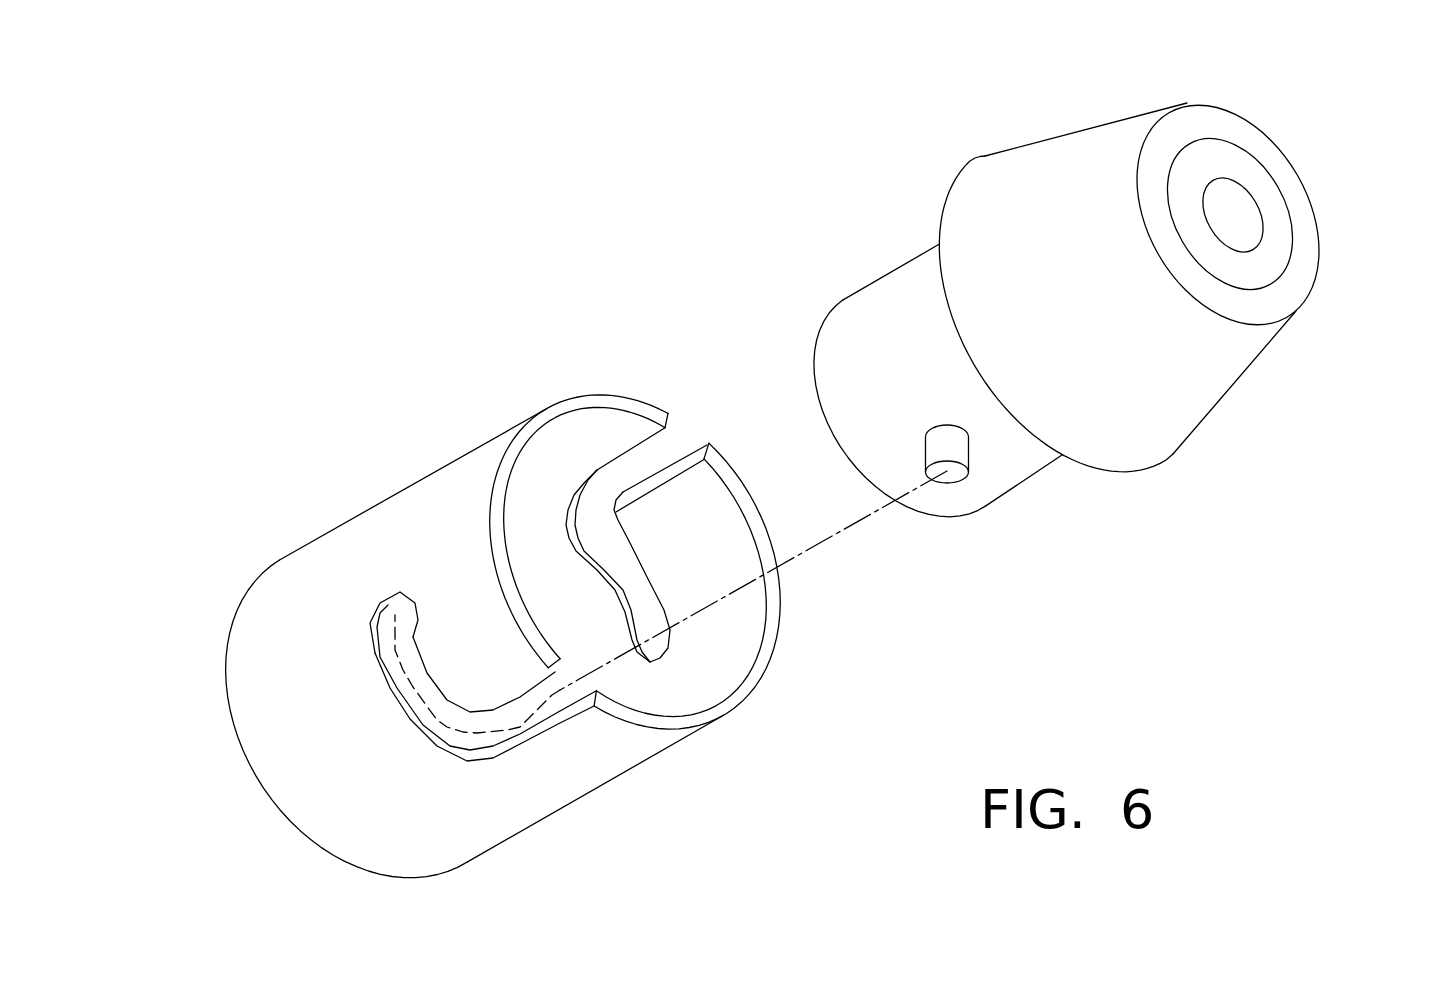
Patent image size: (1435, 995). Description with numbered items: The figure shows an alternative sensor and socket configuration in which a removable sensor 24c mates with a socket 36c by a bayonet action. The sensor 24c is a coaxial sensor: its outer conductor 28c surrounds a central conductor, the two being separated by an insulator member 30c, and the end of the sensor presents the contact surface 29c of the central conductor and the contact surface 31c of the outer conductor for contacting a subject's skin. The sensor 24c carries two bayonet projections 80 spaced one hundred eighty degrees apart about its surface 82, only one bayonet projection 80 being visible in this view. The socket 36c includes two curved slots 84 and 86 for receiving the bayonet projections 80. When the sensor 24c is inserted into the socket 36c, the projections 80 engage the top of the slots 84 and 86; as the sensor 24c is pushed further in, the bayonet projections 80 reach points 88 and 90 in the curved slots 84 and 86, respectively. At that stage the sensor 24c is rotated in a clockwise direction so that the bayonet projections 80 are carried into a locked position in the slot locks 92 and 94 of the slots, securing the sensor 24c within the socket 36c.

The sensor 24c is at (1031, 160).
The outer conductor 28c is at (1198, 383).
The contact surface 29c is at (1236, 212).
The insulator member 30c is at (1275, 262).
The contact surface 31c is at (1267, 155).
The socket 36c is at (278, 748).
The bayonet projection 80 is at (972, 465).
The surface 82 is at (892, 298).
The curved slot 84 is at (552, 706).
The curved slot 86 is at (661, 452).
The point 88 is at (463, 732).
The point 90 is at (592, 515).
The slot lock 92 is at (392, 617).
The slot lock 94 is at (658, 648).